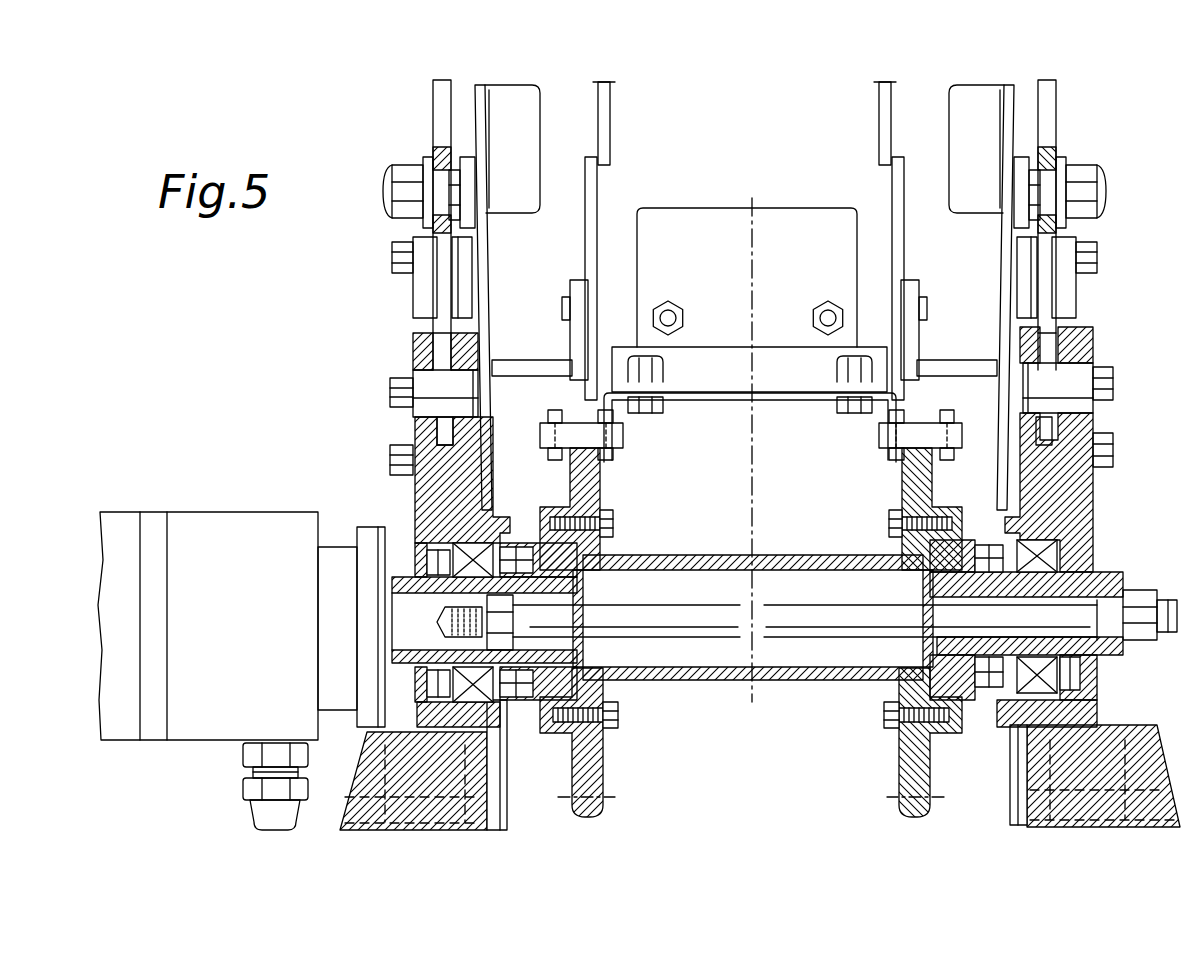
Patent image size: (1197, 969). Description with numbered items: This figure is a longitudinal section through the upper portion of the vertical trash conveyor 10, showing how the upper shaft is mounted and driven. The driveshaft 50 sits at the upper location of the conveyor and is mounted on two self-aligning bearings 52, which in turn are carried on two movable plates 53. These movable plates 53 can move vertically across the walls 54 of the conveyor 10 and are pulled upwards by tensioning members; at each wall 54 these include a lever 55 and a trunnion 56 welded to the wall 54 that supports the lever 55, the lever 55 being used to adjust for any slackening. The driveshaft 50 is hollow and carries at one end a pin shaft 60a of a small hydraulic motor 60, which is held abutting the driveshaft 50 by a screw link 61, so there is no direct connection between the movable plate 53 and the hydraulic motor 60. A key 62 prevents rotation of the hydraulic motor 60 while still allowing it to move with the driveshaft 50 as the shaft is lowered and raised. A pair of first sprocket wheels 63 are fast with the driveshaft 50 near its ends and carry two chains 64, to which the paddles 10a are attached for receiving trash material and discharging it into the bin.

The vertical trash conveyor 10 is at (789, 173).
The paddles 10a is at (675, 232).
The driveshaft 50 is at (833, 553).
The self-aligning bearings 52 is at (430, 697).
The movable plates 53 is at (417, 437).
The walls 54 is at (478, 109).
The lever 55 is at (438, 327).
The trunnion 56 is at (447, 198).
The hydraulic motor 60 is at (240, 648).
The pin shaft 60a is at (408, 615).
The screw link 61 is at (830, 612).
The key 62 is at (380, 722).
The first sprocket wheels 63 is at (597, 480).
The chains 64 is at (607, 463).